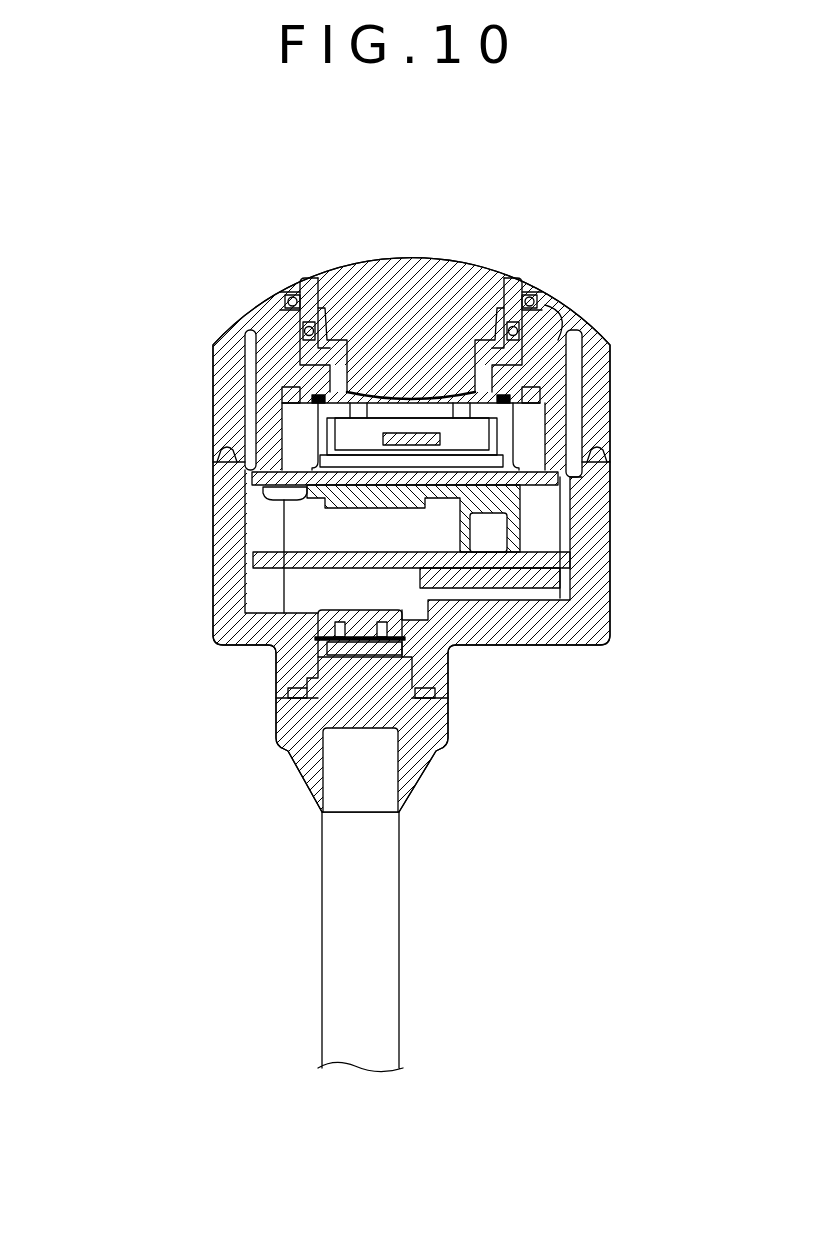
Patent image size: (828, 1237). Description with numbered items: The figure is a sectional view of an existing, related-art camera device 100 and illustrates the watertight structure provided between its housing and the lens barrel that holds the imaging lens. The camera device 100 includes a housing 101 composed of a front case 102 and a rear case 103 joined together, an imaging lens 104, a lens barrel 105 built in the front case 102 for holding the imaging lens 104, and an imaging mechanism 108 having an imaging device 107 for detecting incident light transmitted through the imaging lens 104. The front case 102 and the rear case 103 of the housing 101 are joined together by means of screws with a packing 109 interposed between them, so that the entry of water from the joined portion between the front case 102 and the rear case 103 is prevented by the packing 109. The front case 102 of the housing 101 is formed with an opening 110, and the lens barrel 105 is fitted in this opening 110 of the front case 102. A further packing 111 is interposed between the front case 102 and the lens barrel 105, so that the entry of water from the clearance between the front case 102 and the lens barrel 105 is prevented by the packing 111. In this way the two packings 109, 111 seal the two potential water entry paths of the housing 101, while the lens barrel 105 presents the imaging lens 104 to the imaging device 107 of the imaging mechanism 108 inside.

The camera device 100 is at (347, 139).
The housing 101 is at (112, 380).
The front case 102 is at (213, 392).
The rear case 103 is at (213, 510).
The imaging lens 104 is at (424, 281).
The lens barrel 105 is at (512, 283).
The imaging device 107 is at (472, 435).
The imaging mechanism 108 is at (529, 498).
The packing 109 is at (213, 455).
The opening 110 is at (291, 295).
The packing 111 is at (546, 328).